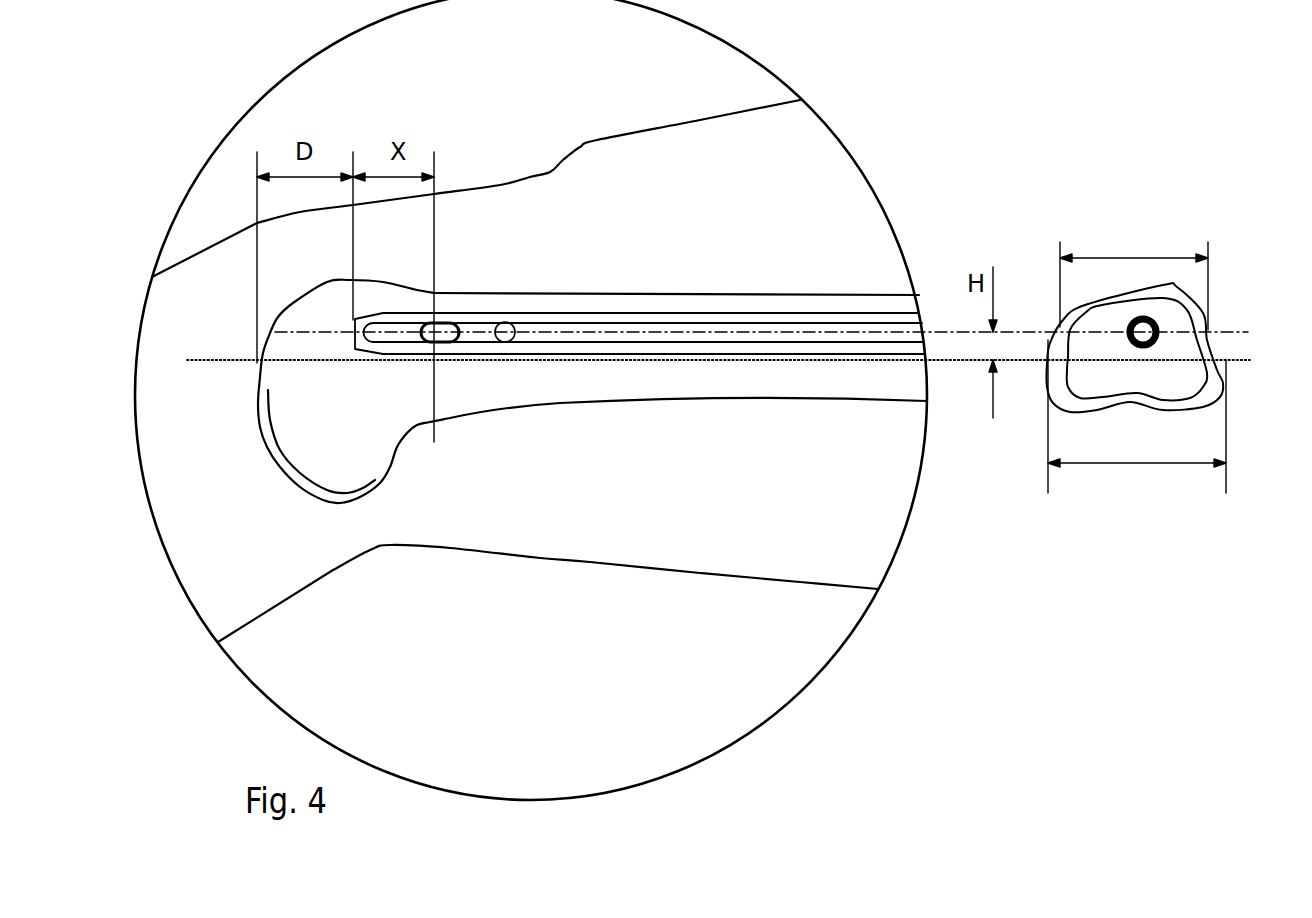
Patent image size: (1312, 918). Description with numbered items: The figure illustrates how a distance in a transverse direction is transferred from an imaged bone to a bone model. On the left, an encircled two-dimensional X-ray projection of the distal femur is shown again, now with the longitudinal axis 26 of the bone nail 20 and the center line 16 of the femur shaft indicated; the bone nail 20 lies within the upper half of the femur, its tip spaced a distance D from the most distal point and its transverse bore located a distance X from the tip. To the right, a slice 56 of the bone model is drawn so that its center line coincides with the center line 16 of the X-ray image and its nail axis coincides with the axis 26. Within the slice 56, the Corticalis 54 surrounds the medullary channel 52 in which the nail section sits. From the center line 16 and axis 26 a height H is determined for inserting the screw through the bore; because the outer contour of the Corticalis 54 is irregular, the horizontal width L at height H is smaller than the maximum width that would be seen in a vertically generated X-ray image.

The center line of femur shaft 16 is at (960, 362).
The bone nail 20 is at (795, 310).
The axis of bone nail 26 is at (940, 330).
The medullary channel of bone model 52 is at (1195, 387).
The Corticalis of bone model 54 is at (1205, 407).
The slice of bone model 56 is at (1163, 513).